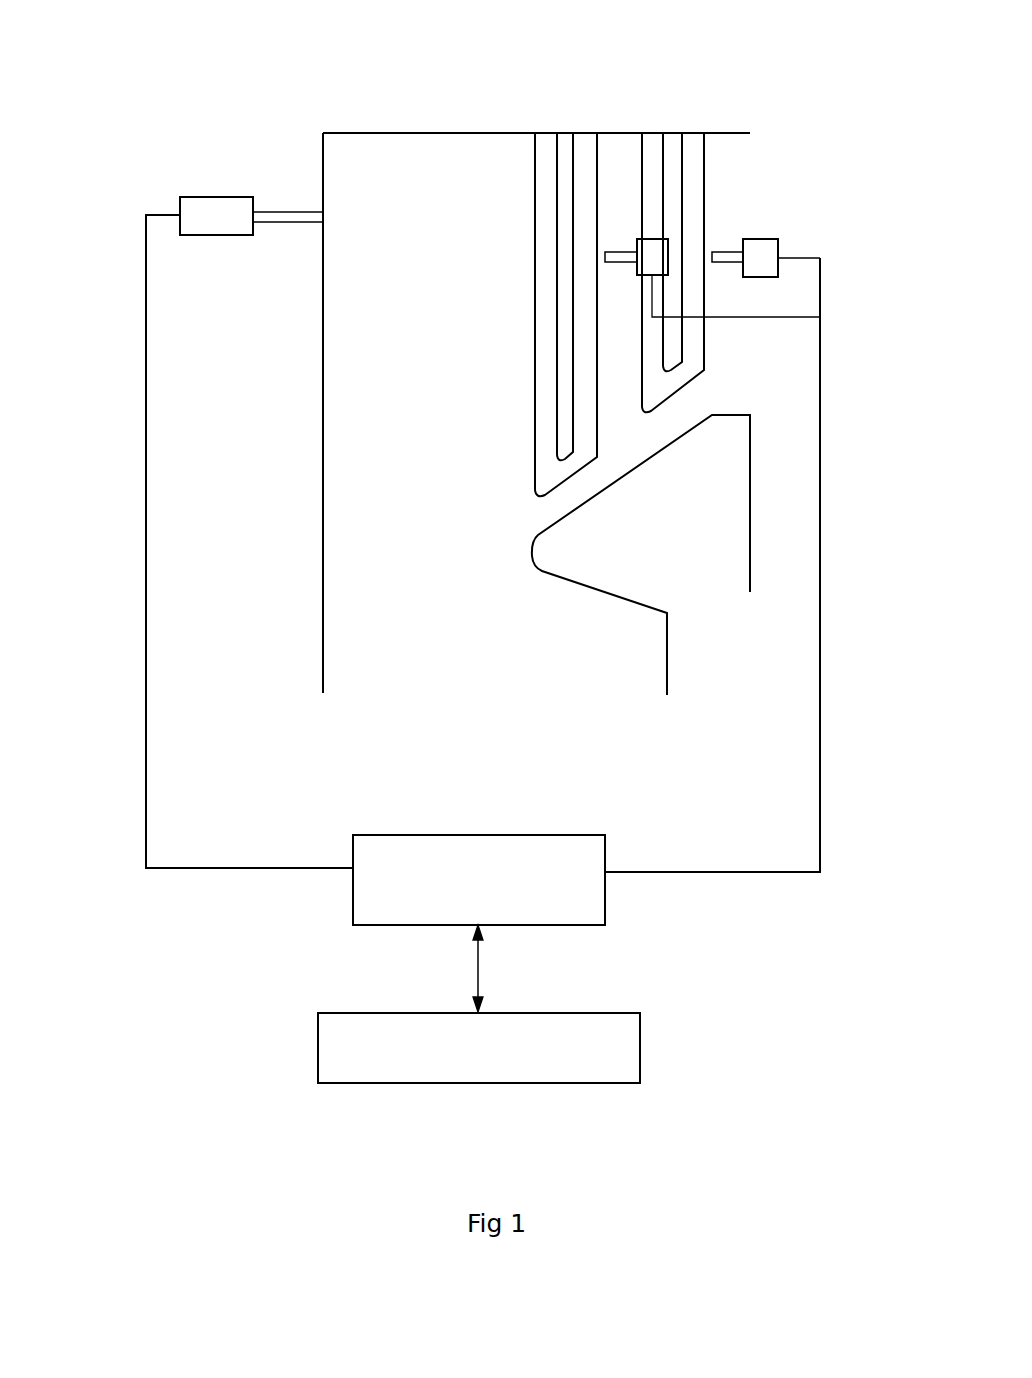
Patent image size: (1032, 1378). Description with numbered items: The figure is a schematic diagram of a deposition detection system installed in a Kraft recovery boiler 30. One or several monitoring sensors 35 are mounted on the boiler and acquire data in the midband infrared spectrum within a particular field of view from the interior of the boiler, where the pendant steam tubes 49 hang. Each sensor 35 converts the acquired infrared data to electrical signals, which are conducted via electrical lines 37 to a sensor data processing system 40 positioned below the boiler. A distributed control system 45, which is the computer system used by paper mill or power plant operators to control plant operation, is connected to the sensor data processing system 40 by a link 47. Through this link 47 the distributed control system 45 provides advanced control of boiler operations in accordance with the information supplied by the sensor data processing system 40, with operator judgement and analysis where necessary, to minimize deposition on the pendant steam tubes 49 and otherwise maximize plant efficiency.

The Kraft recovery boiler 30 is at (510, 95).
The monitoring sensor 35 is at (220, 197).
The electrical lines 37 is at (143, 665).
The sensor data processing system 40 is at (605, 897).
The distributed control system 45 is at (640, 1043).
The link 47 is at (478, 970).
The pendant steam tubes 49 is at (535, 397).